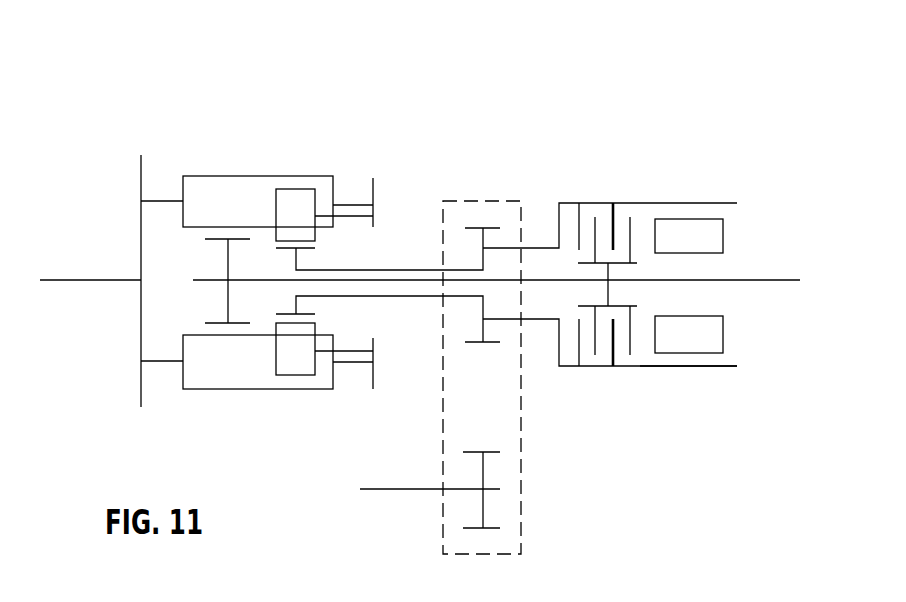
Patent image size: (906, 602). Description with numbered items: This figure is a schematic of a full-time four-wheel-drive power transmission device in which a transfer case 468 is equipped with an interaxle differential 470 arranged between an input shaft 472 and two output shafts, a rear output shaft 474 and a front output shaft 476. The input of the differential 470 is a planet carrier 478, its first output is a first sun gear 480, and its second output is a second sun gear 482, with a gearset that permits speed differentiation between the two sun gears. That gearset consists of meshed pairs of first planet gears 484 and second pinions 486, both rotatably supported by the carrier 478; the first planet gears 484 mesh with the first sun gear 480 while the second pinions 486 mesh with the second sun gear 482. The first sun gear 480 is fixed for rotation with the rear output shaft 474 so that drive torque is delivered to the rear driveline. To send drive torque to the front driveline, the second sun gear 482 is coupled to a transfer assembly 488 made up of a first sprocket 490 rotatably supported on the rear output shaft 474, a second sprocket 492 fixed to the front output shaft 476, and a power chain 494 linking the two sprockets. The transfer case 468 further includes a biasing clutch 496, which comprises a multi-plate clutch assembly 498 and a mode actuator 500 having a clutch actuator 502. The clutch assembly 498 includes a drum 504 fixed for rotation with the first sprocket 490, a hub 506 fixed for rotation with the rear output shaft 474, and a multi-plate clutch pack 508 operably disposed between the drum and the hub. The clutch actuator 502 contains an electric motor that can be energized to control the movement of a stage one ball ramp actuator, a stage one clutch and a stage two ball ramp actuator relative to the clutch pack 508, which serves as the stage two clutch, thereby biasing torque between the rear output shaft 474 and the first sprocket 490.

The transfer case 468 is at (707, 243).
The interaxle differential 470 is at (287, 269).
The input shaft 472 is at (77, 279).
The rear output shaft 474 is at (752, 282).
The front output shaft 476 is at (393, 487).
The planet carrier 478 is at (141, 181).
The first sun gear 480 is at (228, 264).
The second sun gear 482 is at (296, 258).
The first planet gears 484 is at (220, 200).
The second pinions 486 is at (293, 360).
The transfer assembly 488 is at (554, 461).
The first sprocket 490 is at (497, 228).
The second sprocket 492 is at (484, 477).
The power chain 494 is at (500, 555).
The biasing clutch 496 is at (650, 200).
The multi-plate clutch assembly 498 is at (590, 375).
The mode actuator 500 is at (735, 220).
The clutch actuator 502 is at (706, 335).
The drum 504 is at (705, 368).
The hub 506 is at (608, 266).
The multi-plate clutch pack 508 is at (613, 217).